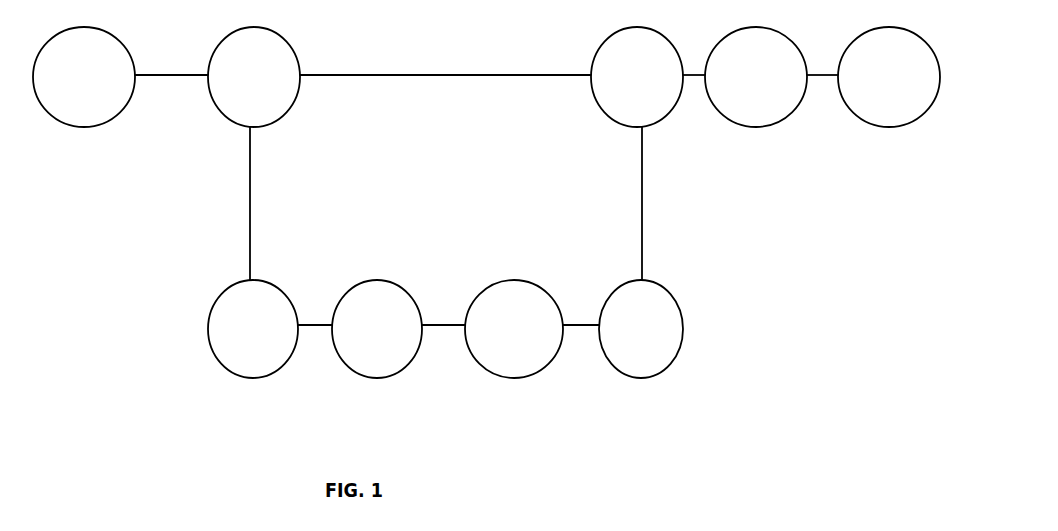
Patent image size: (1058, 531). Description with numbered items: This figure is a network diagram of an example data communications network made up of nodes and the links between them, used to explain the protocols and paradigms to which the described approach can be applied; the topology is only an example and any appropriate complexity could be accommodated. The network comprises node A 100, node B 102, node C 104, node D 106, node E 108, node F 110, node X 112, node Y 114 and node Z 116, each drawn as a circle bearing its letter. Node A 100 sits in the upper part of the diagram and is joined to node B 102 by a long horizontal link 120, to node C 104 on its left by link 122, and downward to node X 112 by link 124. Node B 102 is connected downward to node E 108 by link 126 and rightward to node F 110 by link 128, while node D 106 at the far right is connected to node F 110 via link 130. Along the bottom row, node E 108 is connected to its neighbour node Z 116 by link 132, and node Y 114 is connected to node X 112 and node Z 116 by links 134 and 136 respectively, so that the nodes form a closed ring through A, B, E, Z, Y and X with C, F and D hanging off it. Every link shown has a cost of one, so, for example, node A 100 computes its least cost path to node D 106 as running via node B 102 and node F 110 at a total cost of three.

The node A 100 is at (254, 77).
The node B 102 is at (637, 77).
The node C 104 is at (84, 77).
The node D 106 is at (889, 77).
The node E 108 is at (641, 329).
The node F 110 is at (756, 77).
The node X 112 is at (253, 329).
The node Y 114 is at (377, 329).
The node Z 116 is at (514, 329).
The link 120 is at (433, 73).
The link 122 is at (173, 75).
The link 124 is at (249, 220).
The link 126 is at (642, 192).
The link 128 is at (693, 75).
The link 130 is at (817, 75).
The link 132 is at (578, 327).
The link 134 is at (312, 327).
The link 136 is at (445, 327).